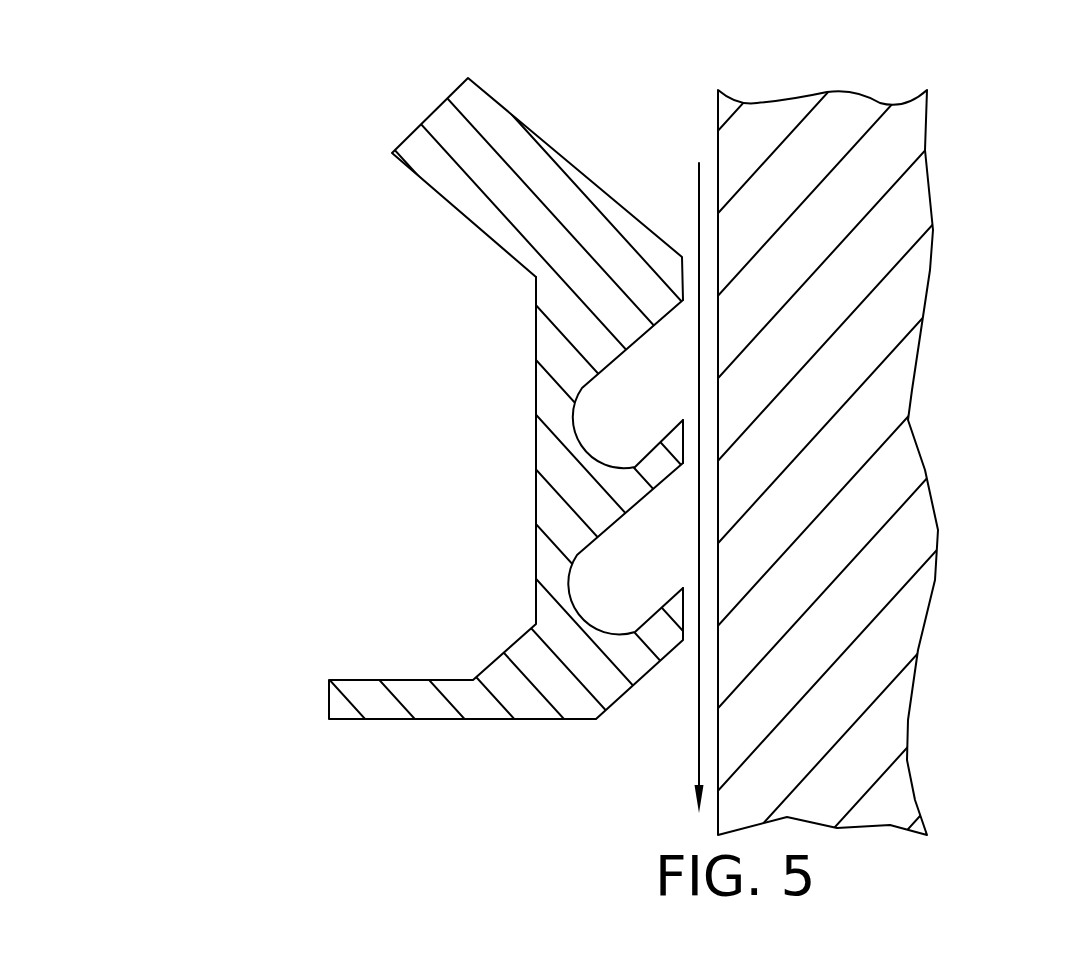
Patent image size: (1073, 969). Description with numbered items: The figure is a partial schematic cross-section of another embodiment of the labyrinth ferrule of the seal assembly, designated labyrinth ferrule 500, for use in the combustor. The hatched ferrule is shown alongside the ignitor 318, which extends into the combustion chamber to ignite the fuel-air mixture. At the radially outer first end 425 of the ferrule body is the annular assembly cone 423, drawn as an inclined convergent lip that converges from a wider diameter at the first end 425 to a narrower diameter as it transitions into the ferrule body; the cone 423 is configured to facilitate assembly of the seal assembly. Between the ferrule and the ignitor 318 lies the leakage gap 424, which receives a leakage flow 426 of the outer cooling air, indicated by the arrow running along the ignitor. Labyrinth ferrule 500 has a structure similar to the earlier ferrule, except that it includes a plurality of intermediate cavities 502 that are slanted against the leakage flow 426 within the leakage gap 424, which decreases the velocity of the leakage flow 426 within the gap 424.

The labyrinth ferrule 500 is at (299, 141).
The ignitor 318 is at (848, 115).
The annular assembly cone 423 is at (577, 75).
The leakage gap 424 is at (657, 84).
The radially outer first end 425 is at (445, 101).
The leakage flow 426 is at (698, 722).
The intermediate cavities 502 is at (605, 427).